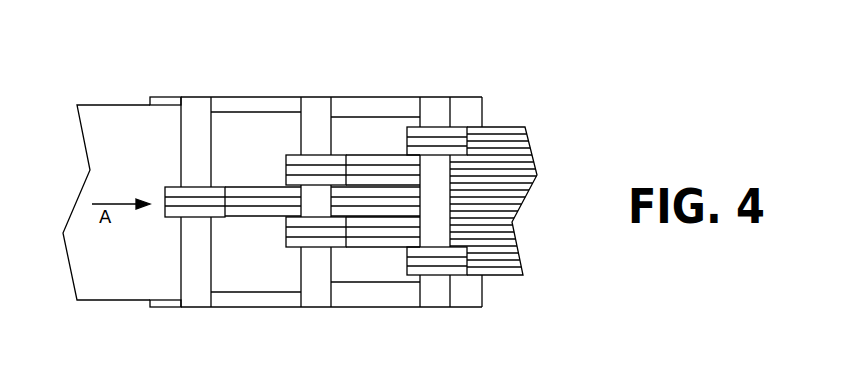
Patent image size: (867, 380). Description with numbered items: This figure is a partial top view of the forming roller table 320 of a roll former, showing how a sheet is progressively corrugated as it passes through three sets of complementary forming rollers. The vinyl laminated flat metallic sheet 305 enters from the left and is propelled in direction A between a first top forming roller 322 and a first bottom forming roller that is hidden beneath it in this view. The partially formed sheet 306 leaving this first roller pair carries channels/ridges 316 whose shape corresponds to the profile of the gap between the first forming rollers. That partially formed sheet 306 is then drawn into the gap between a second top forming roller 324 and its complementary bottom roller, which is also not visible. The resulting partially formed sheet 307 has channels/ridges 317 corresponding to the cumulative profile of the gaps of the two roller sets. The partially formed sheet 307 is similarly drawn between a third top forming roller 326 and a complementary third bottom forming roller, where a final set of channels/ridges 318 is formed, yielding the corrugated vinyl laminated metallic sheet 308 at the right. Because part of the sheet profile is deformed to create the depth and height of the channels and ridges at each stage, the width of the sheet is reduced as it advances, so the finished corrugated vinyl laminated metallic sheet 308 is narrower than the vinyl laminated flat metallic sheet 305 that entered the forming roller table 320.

The vinyl laminated flat metallic sheet 305 is at (95, 302).
The partially formed sheet 306 is at (248, 288).
The partially formed sheet 307 is at (366, 279).
The corrugated vinyl laminated metallic sheet 308 is at (525, 198).
The channels/ridges 316 is at (248, 190).
The channels/ridges 317 is at (366, 162).
The final set of channels/ridges 318 is at (508, 127).
The forming roller table 320 is at (265, 95).
The first top forming roller 322 is at (195, 108).
The second top forming roller 324 is at (313, 107).
The third top forming roller 326 is at (435, 107).